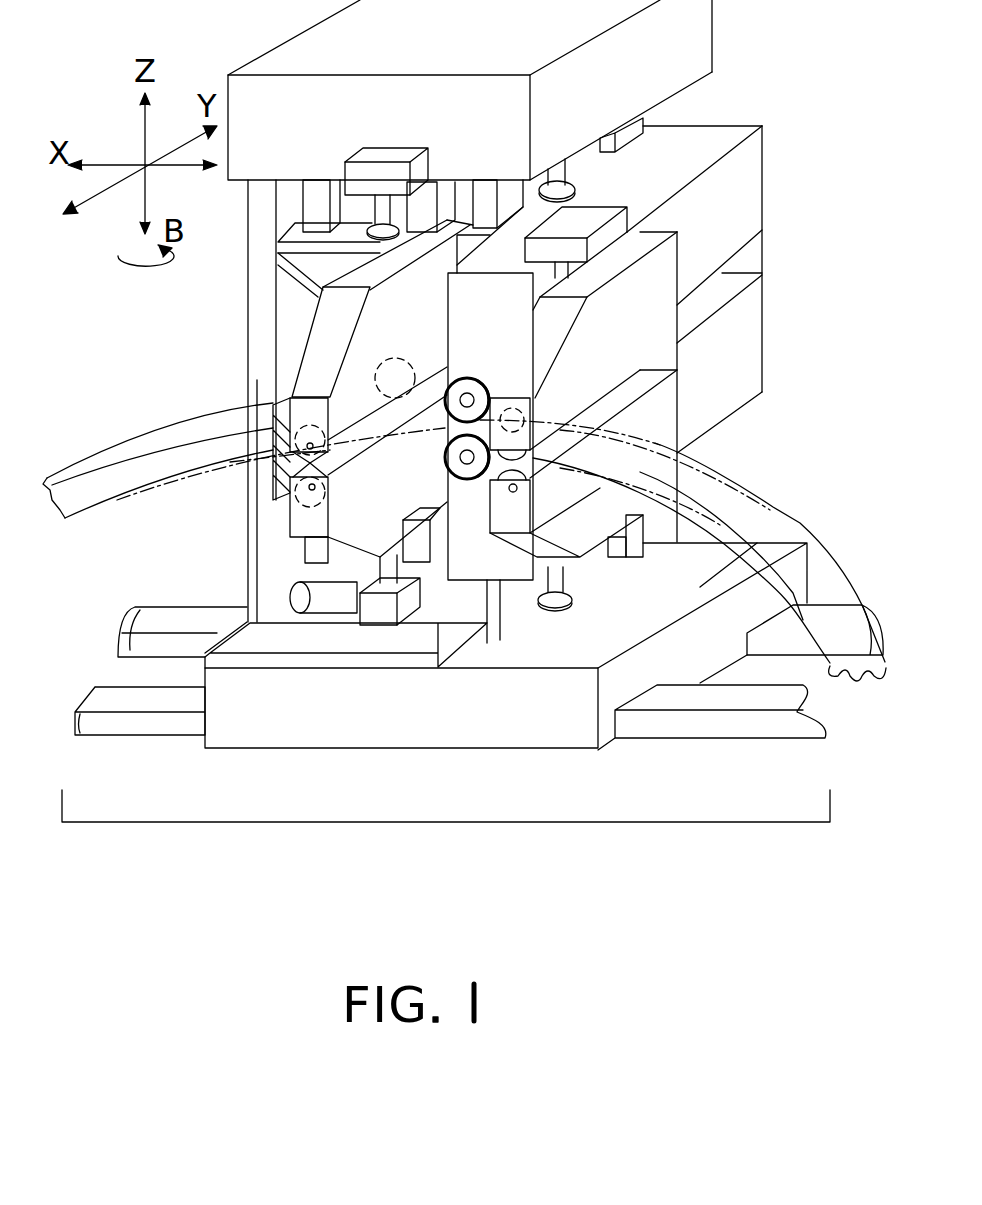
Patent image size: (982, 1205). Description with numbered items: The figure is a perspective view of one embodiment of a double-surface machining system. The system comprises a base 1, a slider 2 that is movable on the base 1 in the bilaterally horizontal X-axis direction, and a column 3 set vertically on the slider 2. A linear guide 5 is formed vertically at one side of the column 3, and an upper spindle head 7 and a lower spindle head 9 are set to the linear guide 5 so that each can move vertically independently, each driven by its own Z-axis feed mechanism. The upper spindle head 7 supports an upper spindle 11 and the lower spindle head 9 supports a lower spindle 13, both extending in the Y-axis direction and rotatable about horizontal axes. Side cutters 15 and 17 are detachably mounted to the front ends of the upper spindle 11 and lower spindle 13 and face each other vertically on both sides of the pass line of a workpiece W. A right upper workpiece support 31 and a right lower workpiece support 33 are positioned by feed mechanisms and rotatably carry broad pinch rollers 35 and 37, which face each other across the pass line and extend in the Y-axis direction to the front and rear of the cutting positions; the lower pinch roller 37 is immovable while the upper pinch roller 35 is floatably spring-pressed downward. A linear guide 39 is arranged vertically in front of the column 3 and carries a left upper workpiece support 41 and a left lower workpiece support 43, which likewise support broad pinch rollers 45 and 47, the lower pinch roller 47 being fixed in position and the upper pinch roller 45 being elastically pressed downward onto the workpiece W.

The base 1 is at (392, 800).
The slider 2 is at (800, 513).
The column 3 is at (262, 272).
The linear guide 5 is at (503, 200).
The upper spindle head 7 is at (752, 212).
The lower spindle head 9 is at (749, 388).
The upper spindle 11 is at (507, 360).
The lower spindle 13 is at (588, 314).
The side cutter 15 is at (458, 372).
The side cutter 17 is at (468, 480).
The right upper workpiece support 31 is at (668, 268).
The right lower workpiece support 33 is at (660, 420).
The upper pinch roller 35 is at (620, 378).
The lower pinch roller 37 is at (551, 482).
The linear guide 39 is at (318, 190).
The left upper workpiece support 41 is at (320, 355).
The left lower workpiece support 43 is at (300, 515).
The upper pinch roller 45 is at (376, 376).
The lower pinch roller 47 is at (348, 462).
The workpiece W is at (740, 487).